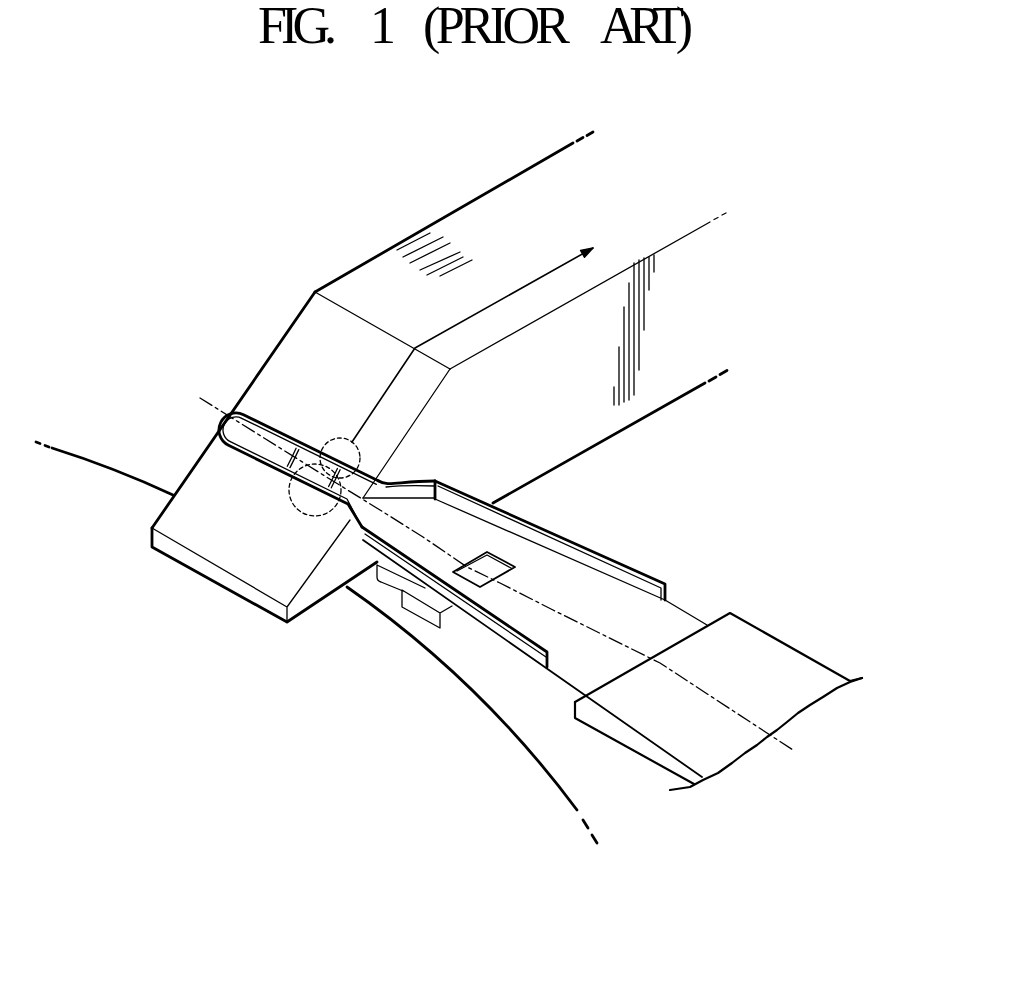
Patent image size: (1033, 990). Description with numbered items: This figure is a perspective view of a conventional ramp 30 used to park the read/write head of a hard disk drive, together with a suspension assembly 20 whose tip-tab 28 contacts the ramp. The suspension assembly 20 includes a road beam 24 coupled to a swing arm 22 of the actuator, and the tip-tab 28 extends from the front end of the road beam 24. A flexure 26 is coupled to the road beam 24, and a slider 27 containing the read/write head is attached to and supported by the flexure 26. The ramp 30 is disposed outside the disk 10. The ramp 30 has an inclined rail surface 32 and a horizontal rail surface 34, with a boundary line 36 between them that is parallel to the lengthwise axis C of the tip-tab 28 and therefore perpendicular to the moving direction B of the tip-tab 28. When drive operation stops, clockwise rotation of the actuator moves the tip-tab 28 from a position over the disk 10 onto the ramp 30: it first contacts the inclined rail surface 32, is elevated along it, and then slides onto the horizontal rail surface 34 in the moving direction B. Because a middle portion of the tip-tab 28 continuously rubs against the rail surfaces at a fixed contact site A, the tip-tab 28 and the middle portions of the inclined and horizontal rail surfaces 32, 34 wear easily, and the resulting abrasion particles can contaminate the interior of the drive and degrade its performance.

The disk 10 is at (97, 487).
The suspension assembly 20 is at (512, 559).
The swing arm 22 is at (640, 747).
The road beam 24 is at (557, 568).
The flexure 26 is at (378, 580).
The slider 27 is at (425, 610).
The tip-tab 28 is at (242, 395).
The ramp 30 is at (439, 364).
The inclined rail surface 32 is at (293, 335).
The horizontal rail surface 34 is at (385, 265).
The boundary line 36 is at (340, 302).
The contact site A is at (300, 502).
The moving direction B is at (518, 288).
The lengthwise axis C is at (205, 398).